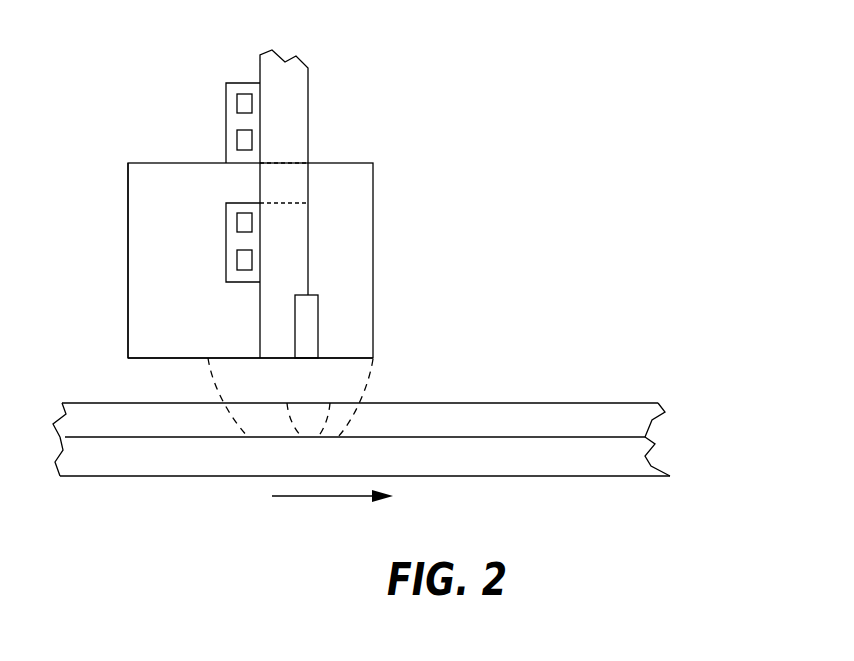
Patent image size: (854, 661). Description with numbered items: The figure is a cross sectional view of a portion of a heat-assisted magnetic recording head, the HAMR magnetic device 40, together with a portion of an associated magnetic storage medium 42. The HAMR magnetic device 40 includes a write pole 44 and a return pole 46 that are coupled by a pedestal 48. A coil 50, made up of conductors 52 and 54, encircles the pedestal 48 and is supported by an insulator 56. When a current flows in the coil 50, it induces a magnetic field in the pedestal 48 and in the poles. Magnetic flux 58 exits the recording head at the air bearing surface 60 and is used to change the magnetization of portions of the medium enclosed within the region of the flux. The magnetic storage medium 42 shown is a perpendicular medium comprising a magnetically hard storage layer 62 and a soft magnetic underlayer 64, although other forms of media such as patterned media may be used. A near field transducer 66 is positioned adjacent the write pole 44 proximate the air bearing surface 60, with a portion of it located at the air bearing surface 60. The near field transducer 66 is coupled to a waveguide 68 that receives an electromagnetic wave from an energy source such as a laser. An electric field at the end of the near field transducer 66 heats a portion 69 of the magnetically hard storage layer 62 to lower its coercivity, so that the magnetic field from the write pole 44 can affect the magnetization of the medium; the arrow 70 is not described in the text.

The HAMR magnetic device 40 is at (478, 80).
The magnetic storage medium 42 is at (672, 374).
The write pole 44 is at (350, 208).
The return pole 46 is at (153, 293).
The pedestal 48 is at (288, 183).
The coil 50 is at (207, 66).
The conductor 52 is at (231, 256).
The conductor 54 is at (230, 105).
The insulator 56 is at (233, 88).
The magnetic flux 58 is at (366, 397).
The air bearing surface 60 is at (147, 358).
The magnetically hard storage layer 62 is at (617, 426).
The soft magnetic underlayer 64 is at (610, 453).
The near field transducer 66 is at (312, 318).
The waveguide 68 is at (280, 123).
The heated portion 69 is at (284, 433).
The travel direction 70 is at (332, 500).